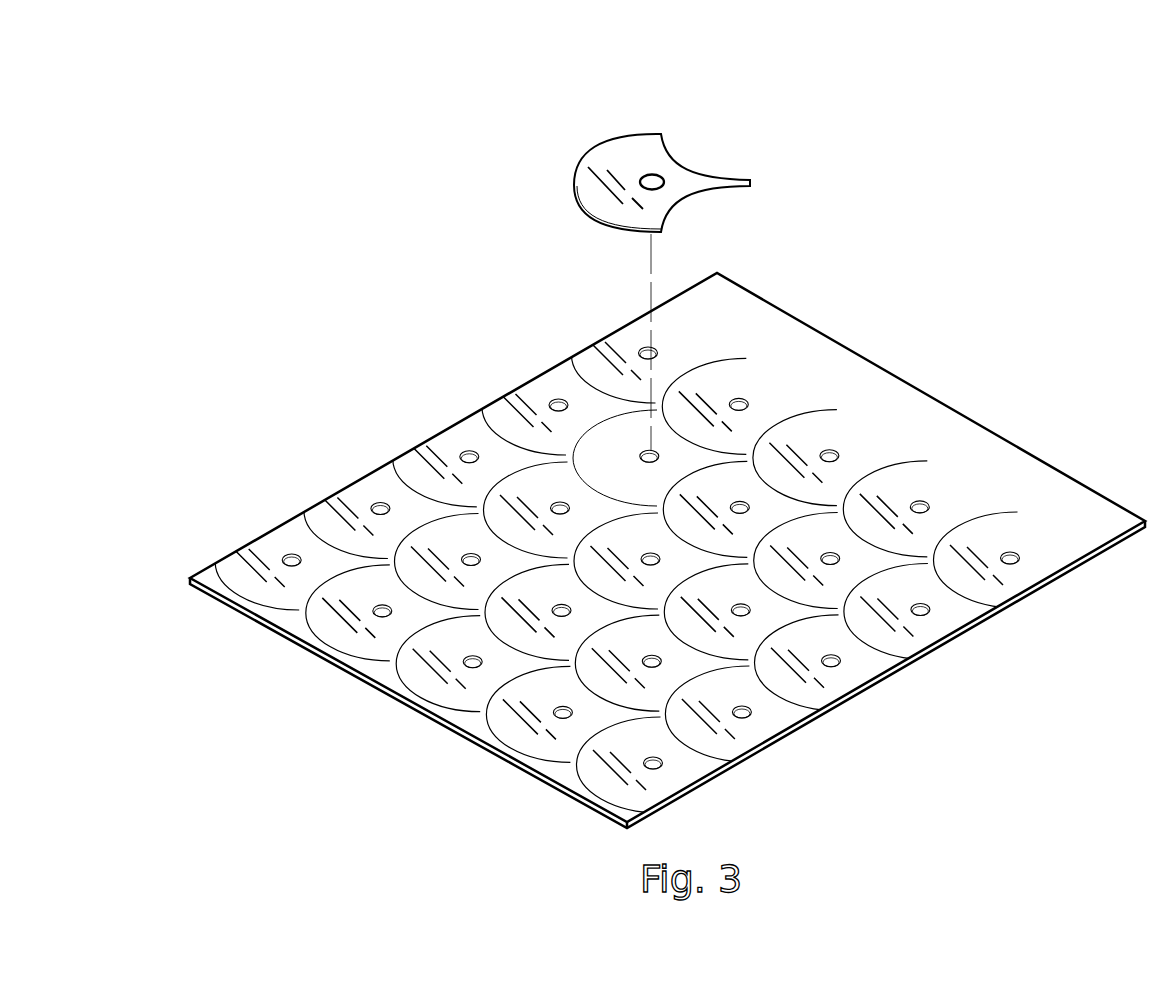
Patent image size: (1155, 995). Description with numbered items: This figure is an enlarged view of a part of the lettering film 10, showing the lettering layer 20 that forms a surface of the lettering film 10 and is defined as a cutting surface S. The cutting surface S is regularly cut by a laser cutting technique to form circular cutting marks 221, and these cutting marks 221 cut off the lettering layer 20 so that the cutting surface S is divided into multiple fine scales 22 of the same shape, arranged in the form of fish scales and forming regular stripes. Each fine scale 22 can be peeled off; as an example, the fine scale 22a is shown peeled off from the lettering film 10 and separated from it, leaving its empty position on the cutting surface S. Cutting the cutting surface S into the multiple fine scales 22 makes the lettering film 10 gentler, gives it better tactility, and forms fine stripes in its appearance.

The lettering film 10 is at (861, 252).
The lettering layer 20 is at (1013, 458).
The fine scales 22 is at (417, 468).
The cutting marks 221 is at (397, 485).
The fine scale 22a is at (620, 150).
The cutting surface S is at (857, 455).